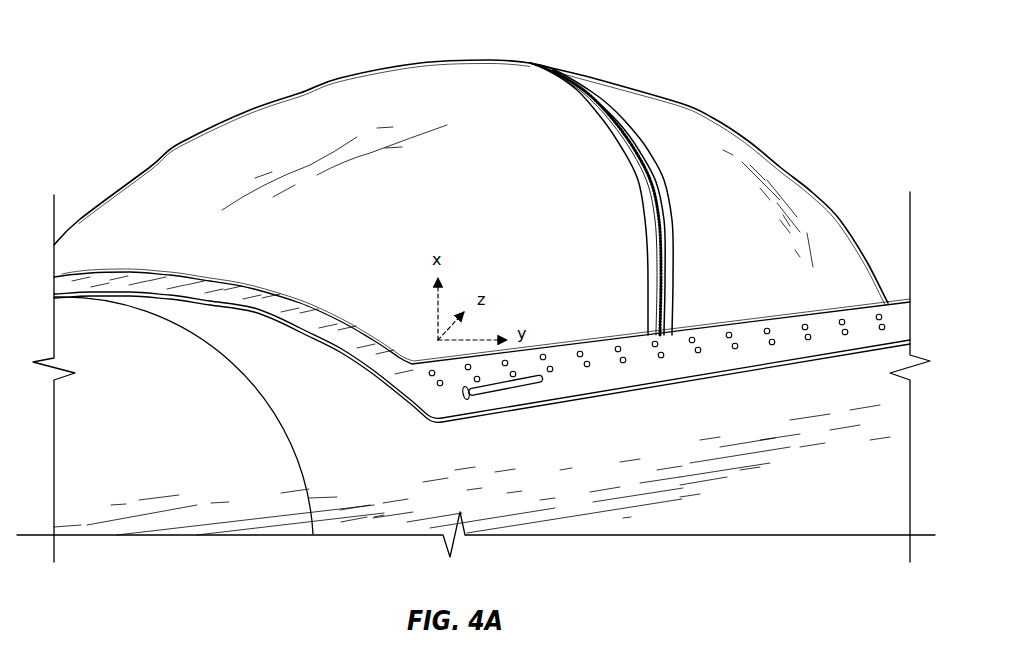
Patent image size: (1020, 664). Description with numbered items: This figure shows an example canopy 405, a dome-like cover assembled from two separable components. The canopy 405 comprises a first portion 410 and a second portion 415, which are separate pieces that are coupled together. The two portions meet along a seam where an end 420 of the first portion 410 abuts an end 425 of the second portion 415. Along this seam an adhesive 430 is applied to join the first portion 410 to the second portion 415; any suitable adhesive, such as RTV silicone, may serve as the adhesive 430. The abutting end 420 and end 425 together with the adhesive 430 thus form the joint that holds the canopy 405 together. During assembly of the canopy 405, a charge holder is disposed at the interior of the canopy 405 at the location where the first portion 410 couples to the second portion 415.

The canopy 405 is at (198, 162).
The first portion 410 is at (453, 75).
The second portion 415 is at (652, 106).
The end of the first portion 420 is at (647, 229).
The end of the second portion 425 is at (670, 232).
The adhesive 430 is at (648, 203).